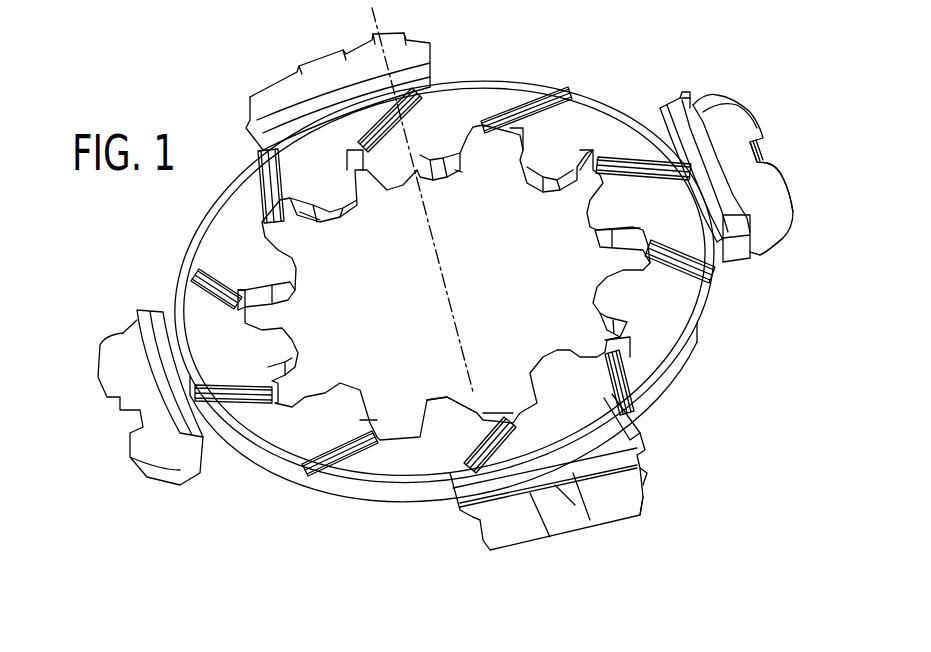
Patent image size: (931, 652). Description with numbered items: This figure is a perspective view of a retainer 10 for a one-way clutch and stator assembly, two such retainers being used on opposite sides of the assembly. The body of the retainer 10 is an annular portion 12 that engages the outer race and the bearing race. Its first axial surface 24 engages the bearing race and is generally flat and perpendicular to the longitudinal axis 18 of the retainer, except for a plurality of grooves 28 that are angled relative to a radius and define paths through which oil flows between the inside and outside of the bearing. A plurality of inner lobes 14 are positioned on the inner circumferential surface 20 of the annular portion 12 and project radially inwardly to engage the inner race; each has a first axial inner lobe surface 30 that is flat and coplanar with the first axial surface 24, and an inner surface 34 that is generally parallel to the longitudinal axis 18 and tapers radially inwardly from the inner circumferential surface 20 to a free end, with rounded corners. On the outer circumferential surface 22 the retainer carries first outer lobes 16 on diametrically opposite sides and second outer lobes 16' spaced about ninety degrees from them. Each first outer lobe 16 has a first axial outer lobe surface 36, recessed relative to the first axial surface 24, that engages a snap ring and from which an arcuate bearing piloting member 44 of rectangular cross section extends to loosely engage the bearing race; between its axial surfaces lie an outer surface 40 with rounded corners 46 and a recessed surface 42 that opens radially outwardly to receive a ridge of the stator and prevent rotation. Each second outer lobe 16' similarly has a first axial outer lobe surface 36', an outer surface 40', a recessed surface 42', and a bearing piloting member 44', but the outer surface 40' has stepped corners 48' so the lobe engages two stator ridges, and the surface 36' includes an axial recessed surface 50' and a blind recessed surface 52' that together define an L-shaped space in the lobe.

The retainer 10 is at (221, 118).
The annular portion 12 is at (190, 240).
The inner lobes 14 is at (436, 194).
The first outer lobes 16 is at (739, 270).
The longitudinal axis 18 is at (443, 273).
The inner circumferential surface 20 is at (585, 178).
The outer circumferential surface 22 is at (307, 483).
The first axial surface 24 is at (459, 447).
The grooves 28 is at (627, 360).
The first axial inner lobe surface 30 is at (344, 191).
The inner surface 34 is at (310, 214).
The first axial outer lobe surface 36 is at (805, 187).
The outer surface 40 is at (743, 157).
The recessed surface 42 is at (781, 133).
The bearing piloting member 44 is at (673, 139).
The rounded corners 46 is at (686, 93).
The second outer lobes 16' is at (682, 459).
The first axial outer lobe surface 36' is at (587, 478).
The outer surface 40' is at (578, 501).
The recessed surface 42' is at (569, 525).
The bearing piloting member 44' is at (664, 407).
The stepped corners 48' is at (551, 511).
The axial recessed surface 50' is at (589, 539).
The blind recessed surface 52' is at (527, 544).